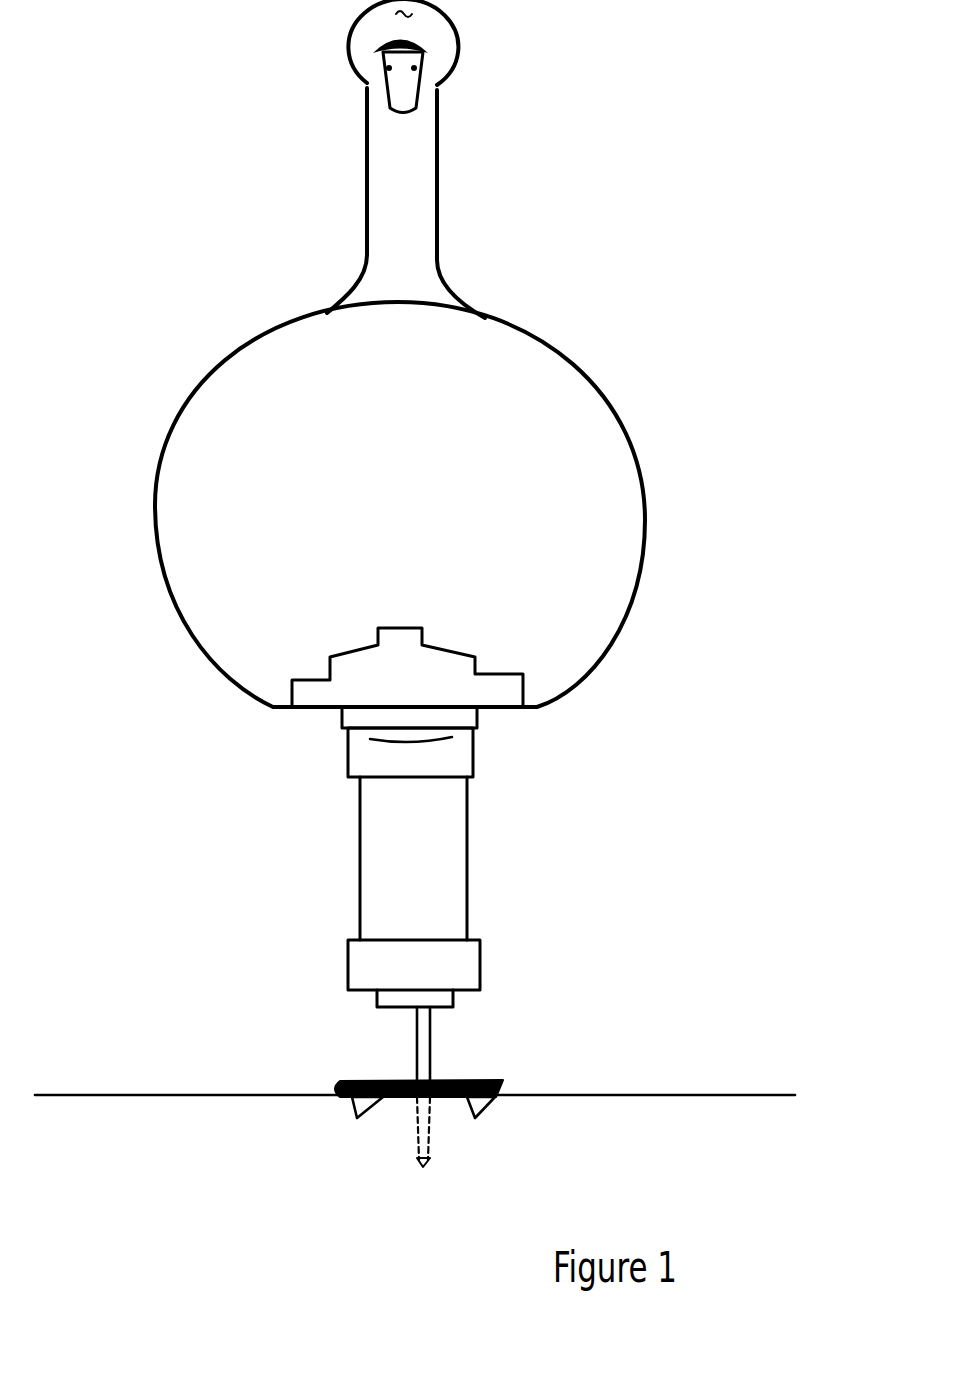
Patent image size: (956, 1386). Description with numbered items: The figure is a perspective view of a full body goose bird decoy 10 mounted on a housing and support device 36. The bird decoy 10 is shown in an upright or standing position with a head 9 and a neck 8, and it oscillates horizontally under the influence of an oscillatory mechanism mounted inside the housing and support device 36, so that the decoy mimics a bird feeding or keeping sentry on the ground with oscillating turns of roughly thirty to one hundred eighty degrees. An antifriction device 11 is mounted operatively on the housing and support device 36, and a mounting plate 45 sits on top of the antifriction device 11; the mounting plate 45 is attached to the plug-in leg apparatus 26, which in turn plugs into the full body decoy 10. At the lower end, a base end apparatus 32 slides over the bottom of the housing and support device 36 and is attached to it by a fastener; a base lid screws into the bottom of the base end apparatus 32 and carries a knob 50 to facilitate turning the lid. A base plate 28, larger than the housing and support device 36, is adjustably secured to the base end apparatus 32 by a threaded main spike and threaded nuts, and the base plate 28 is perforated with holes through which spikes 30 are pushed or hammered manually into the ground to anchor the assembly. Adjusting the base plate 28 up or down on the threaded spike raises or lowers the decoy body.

The neck 8 is at (450, 52).
The head 9 is at (437, 180).
The bird decoy 10 is at (512, 531).
The plug-in leg apparatus 26 is at (465, 691).
The mounting plate 45 is at (360, 715).
The antifriction device 11 is at (456, 754).
The housing and support device 36 is at (448, 858).
The base end apparatus 32 is at (464, 967).
The knob 50 is at (377, 999).
The base plate 28 is at (518, 1078).
The spikes 30 is at (506, 1109).